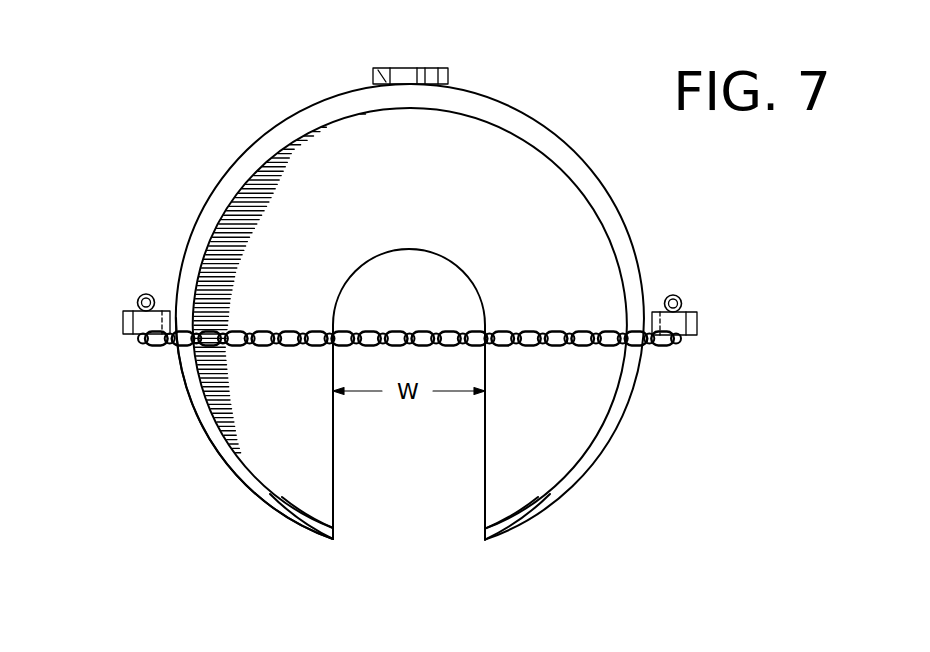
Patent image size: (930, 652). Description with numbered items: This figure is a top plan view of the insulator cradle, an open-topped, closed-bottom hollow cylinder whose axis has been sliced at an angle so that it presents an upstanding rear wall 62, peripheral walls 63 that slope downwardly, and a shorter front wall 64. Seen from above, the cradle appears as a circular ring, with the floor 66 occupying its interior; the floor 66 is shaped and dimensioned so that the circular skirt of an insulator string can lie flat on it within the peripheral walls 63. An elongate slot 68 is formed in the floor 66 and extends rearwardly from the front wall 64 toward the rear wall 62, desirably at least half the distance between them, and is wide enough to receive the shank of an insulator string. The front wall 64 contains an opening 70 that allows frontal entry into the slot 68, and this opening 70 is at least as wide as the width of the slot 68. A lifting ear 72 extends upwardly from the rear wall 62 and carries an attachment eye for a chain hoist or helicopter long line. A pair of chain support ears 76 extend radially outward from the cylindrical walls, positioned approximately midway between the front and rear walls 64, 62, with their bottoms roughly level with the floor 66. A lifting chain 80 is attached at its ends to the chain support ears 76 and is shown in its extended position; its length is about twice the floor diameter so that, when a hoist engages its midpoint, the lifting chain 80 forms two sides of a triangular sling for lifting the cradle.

The rear wall 62 is at (497, 97).
The peripheral walls 63 is at (191, 400).
The front wall 64 is at (300, 527).
The floor 66 is at (339, 231).
The elongate slot 68 is at (438, 442).
The opening 70 is at (410, 545).
The lifting ear 72 is at (383, 80).
The chain support ears 76 is at (123, 322).
The lifting chain 80 is at (500, 330).